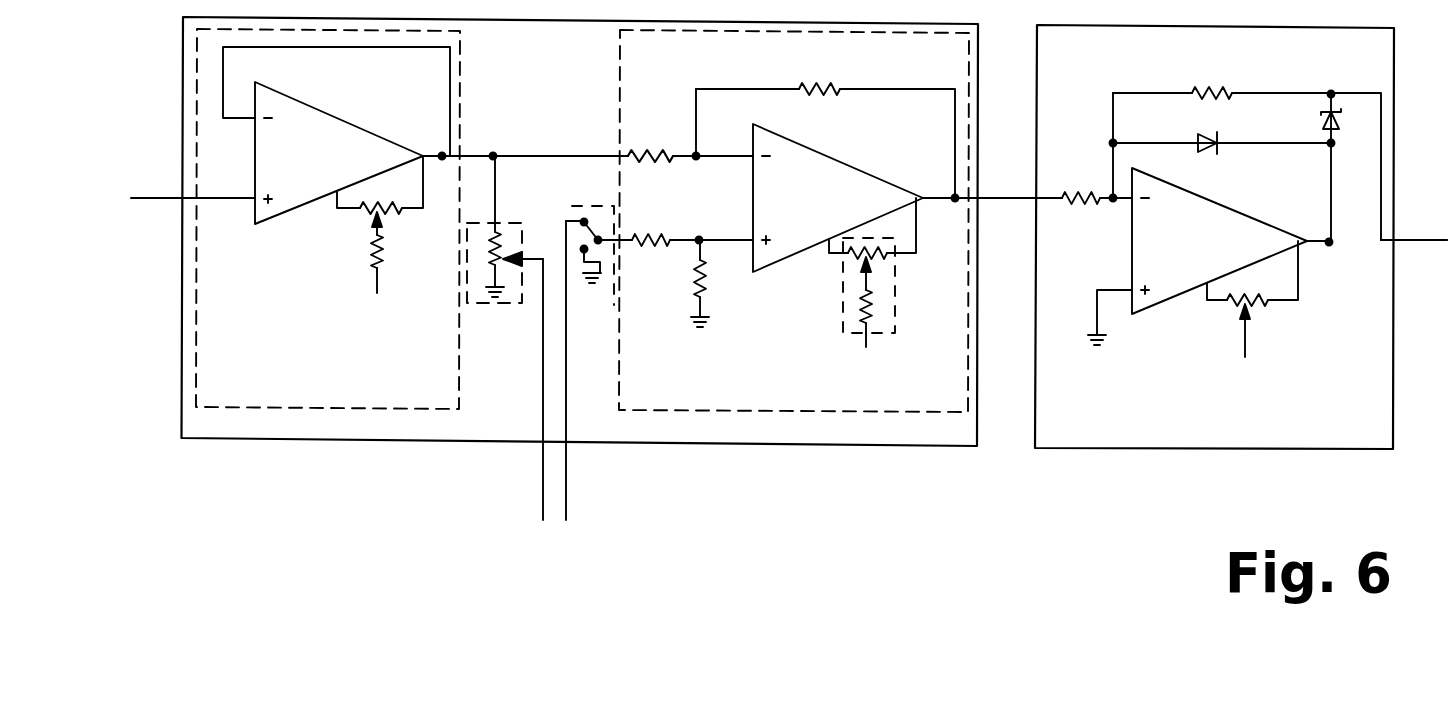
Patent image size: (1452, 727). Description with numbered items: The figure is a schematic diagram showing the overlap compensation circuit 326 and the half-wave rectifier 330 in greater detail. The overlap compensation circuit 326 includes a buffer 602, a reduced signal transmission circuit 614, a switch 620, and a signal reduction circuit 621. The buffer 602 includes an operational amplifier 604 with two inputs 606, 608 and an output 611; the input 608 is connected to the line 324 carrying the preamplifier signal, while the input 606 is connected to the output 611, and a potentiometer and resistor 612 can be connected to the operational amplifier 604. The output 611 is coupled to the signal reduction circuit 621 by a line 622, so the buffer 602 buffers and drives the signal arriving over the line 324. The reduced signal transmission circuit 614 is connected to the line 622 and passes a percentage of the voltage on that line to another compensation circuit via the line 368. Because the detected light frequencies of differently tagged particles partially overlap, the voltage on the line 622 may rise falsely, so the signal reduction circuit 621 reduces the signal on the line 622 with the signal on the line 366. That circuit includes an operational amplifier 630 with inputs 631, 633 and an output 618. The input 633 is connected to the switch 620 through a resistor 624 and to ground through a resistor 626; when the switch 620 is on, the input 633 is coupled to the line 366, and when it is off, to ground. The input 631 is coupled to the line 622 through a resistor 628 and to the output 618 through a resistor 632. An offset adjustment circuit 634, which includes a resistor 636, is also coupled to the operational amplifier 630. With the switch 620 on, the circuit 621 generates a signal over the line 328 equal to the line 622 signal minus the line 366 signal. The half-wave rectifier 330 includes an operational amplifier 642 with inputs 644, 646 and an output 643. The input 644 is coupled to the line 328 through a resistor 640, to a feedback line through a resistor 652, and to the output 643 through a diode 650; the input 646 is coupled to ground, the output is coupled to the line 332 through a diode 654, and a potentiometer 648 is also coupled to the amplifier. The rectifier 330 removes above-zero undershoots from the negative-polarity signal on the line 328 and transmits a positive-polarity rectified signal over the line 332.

The line 324 is at (145, 197).
The overlap compensation circuit 326 is at (737, 447).
The line 328 is at (987, 193).
The half-wave rectifier 330 is at (1205, 453).
The line 332 is at (1405, 237).
The line 366 is at (567, 486).
The line 368 is at (541, 486).
The buffer 602 is at (383, 410).
The operational amplifier 604 is at (320, 110).
The input 606 is at (253, 122).
The input 608 is at (253, 203).
The output 611 is at (423, 152).
The resistor 612 is at (383, 244).
The reduced signal transmission circuit 614 is at (502, 230).
The output 618 is at (922, 190).
The switch 620 is at (602, 202).
The signal reduction circuit 621 is at (613, 67).
The line 622 is at (522, 155).
The resistor 624 is at (648, 230).
The resistor 626 is at (712, 286).
The resistor 628 is at (643, 156).
The operational amplifier 630 is at (837, 157).
The input 631 is at (747, 155).
The resistor 632 is at (825, 79).
The input 633 is at (748, 240).
The offset adjustment circuit 634 is at (895, 283).
The resistor 636 is at (872, 297).
The resistor 640 is at (1088, 193).
The operational amplifier 642 is at (1210, 200).
The output 643 is at (1303, 247).
The input 644 is at (1125, 207).
The input 646 is at (1128, 299).
The potentiometer 648 is at (1263, 307).
The diode 650 is at (1202, 132).
The resistor 652 is at (1198, 83).
The diode 654 is at (1343, 122).